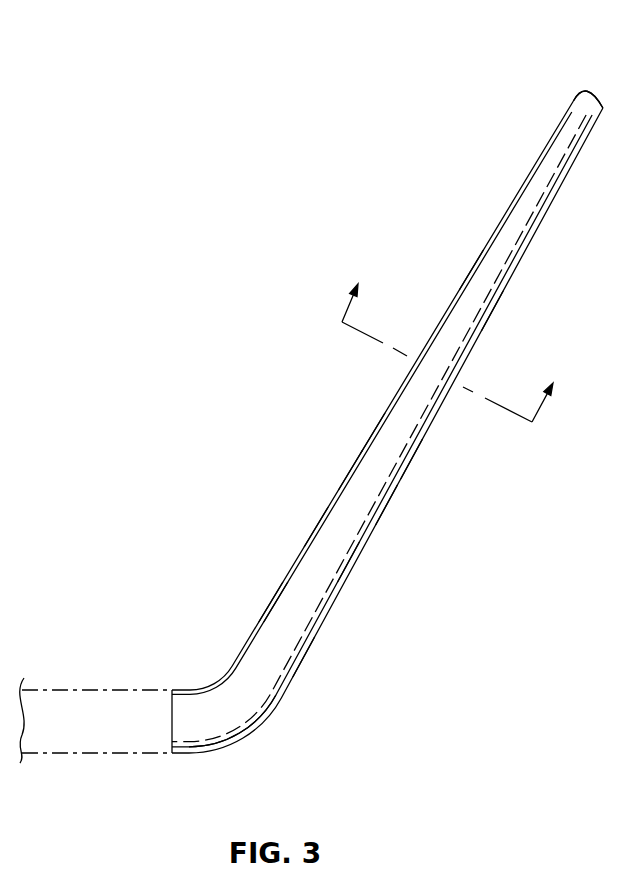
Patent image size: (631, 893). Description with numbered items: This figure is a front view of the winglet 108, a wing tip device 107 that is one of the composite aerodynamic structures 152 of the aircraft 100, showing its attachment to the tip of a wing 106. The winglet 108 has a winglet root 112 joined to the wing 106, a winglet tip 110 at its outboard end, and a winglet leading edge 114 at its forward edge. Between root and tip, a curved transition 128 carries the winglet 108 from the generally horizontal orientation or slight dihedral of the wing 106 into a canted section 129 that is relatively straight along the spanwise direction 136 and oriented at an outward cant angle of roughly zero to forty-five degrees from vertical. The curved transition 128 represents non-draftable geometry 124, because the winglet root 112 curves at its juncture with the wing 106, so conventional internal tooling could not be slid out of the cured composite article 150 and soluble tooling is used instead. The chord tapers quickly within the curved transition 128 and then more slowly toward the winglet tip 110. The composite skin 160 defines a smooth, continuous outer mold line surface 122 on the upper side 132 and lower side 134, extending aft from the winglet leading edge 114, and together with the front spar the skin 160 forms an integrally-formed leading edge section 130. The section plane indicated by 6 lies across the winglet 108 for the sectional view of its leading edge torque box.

The aircraft 100 is at (549, 147).
The wing 106 is at (48, 690).
The wing tip device 107 is at (513, 207).
The winglet 108 is at (562, 190).
The winglet tip 110 is at (594, 90).
The winglet root 112 is at (172, 757).
The winglet leading edge 114 is at (310, 592).
The outer mold line surface 122 is at (375, 433).
The non-draftable geometry 124 is at (250, 723).
The curved transition 128 is at (300, 657).
The canted section 129 is at (352, 470).
The leading edge section 130 is at (450, 348).
The upper side 132 is at (318, 527).
The lower side 134 is at (352, 562).
The spanwise direction 136 is at (387, 505).
The composite article 150 is at (494, 270).
The aerodynamic structure 152 is at (494, 311).
The skin 160 is at (272, 602).
The section line 6- 6 is at (453, 340).